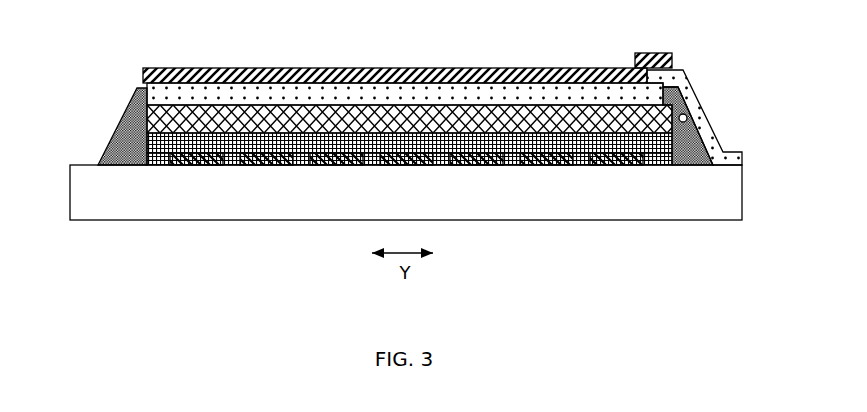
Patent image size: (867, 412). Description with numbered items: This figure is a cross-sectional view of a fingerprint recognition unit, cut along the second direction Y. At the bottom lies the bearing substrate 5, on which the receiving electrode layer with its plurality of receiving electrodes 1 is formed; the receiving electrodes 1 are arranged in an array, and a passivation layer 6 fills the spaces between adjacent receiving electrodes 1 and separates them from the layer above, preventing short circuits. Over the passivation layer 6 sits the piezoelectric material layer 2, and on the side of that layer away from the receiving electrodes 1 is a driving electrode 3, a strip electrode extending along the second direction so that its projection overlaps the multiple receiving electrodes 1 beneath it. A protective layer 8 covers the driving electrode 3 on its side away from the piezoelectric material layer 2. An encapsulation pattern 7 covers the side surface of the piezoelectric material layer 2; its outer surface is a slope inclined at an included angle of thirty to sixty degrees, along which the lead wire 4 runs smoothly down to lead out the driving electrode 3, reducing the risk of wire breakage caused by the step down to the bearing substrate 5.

The receiving electrode 1 is at (170, 157).
The piezoelectric material layer 2 is at (170, 120).
The driving electrode 3 is at (170, 98).
The lead wire 4 is at (722, 157).
The bearing substrate 5 is at (100, 190).
The passivation layer 6 is at (670, 145).
The encapsulation pattern 7 is at (688, 127).
The protective layer 8 is at (650, 55).